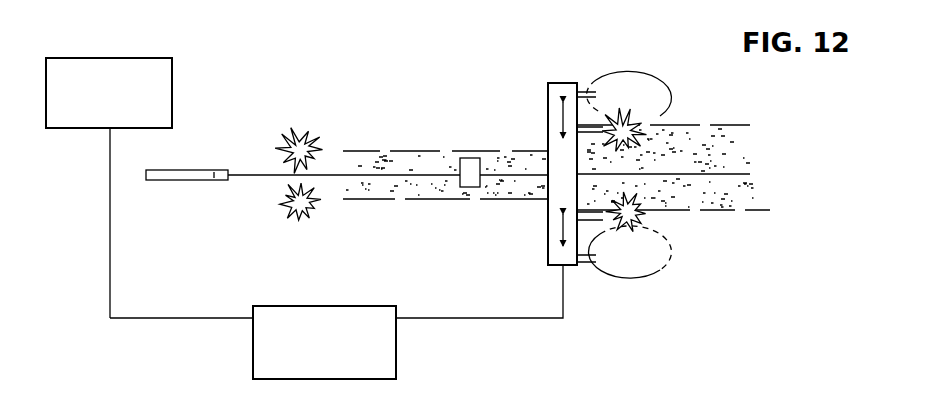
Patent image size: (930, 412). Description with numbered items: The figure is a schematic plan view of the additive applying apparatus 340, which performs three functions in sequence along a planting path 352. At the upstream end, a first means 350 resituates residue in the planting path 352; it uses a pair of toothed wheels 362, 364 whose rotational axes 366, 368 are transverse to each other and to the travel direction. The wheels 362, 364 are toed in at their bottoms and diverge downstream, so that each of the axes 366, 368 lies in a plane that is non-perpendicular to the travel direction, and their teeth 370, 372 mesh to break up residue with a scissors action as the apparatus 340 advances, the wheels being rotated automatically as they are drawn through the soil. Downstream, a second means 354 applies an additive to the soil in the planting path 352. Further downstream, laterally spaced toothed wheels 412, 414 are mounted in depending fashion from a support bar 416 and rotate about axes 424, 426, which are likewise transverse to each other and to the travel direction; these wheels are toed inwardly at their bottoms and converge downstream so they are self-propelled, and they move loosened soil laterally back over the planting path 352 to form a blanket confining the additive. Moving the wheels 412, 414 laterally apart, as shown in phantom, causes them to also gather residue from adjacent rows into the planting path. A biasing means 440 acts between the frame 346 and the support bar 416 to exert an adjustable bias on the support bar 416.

The additive applying apparatus 340 is at (445, 170).
The frame 346 is at (128, 114).
The first means 350 is at (254, 194).
The planting path 352 is at (395, 172).
The second means 354 is at (468, 207).
The toothed wheel 362 is at (285, 148).
The toothed wheel 364 is at (299, 232).
The rotational axis 366 is at (287, 115).
The rotational axis 368 is at (303, 232).
The teeth 370 is at (314, 115).
The teeth 372 is at (326, 232).
The toothed wheel 412 is at (675, 116).
The toothed wheel 414 is at (691, 257).
The support bar 416 is at (563, 83).
The axis 424 is at (618, 146).
The axis 426 is at (637, 226).
The biasing means 440 is at (340, 376).